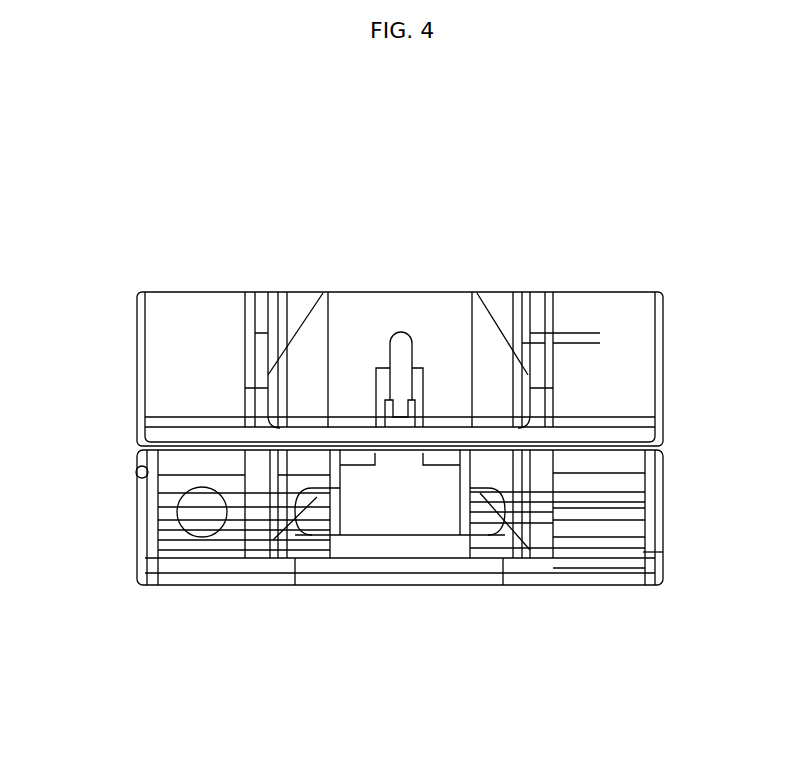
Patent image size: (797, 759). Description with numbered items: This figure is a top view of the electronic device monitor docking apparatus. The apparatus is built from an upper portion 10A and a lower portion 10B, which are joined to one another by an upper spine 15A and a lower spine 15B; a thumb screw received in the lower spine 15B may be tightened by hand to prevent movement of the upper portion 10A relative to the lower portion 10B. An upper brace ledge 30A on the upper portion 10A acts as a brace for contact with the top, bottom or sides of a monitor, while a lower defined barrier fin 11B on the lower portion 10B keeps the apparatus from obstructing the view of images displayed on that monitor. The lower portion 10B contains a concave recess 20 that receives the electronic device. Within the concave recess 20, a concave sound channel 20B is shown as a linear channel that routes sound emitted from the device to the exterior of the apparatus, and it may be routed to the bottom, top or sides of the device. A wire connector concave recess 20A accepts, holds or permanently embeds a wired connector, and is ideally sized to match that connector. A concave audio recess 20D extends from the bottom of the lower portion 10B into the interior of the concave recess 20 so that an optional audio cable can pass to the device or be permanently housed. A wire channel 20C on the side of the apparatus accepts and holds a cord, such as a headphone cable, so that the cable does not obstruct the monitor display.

The upper portion 10A is at (440, 300).
The lower portion 10B is at (590, 570).
The lower defined barrier fin 11B is at (260, 403).
The upper spine 15A is at (398, 345).
The lower spine 15B is at (376, 380).
The concave recess 20 is at (626, 484).
The wire connector concave recess 20A is at (440, 515).
The concave sound channel 20B is at (623, 508).
The wire channel 20C is at (137, 467).
The concave audio recess 20D is at (202, 514).
The upper brace ledge 30A is at (603, 302).